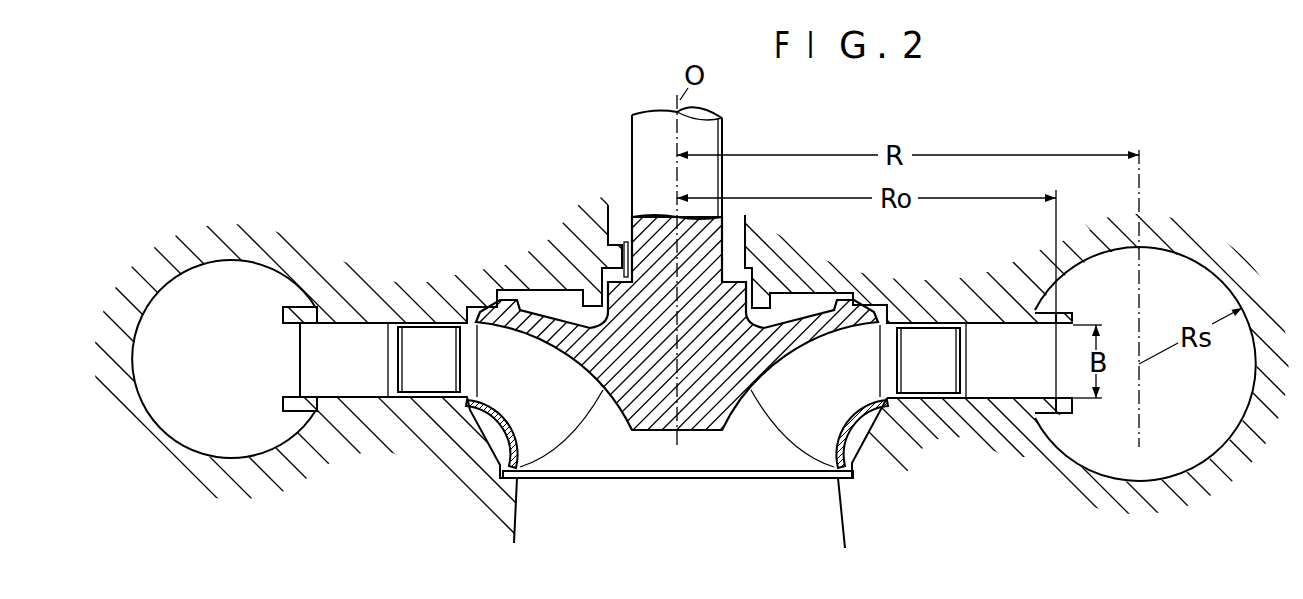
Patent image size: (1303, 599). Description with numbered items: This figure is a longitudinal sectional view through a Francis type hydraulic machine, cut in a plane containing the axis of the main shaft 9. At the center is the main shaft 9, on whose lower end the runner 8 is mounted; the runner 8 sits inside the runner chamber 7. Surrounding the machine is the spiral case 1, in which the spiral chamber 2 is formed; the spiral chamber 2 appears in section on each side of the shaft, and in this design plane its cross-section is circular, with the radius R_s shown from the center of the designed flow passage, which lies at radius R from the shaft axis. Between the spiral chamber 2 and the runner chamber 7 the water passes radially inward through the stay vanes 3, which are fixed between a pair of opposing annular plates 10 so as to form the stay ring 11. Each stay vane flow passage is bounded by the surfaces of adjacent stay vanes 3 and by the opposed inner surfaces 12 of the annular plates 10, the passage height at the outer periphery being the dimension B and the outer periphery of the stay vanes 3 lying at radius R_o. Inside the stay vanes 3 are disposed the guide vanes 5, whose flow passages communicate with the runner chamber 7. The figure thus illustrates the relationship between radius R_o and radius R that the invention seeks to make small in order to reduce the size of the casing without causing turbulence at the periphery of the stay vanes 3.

The spiral case 1 is at (1192, 262).
The spiral chamber 2 is at (1202, 421).
The stay vane 3 is at (1058, 377).
The guide vane 5 is at (917, 403).
The runner chamber 7 is at (860, 438).
The runner 8 is at (762, 356).
The main shaft 9 is at (632, 156).
The annular plate 10 is at (978, 318).
The stay ring 11 is at (975, 435).
The inner surface of annular plate 12 is at (988, 325).